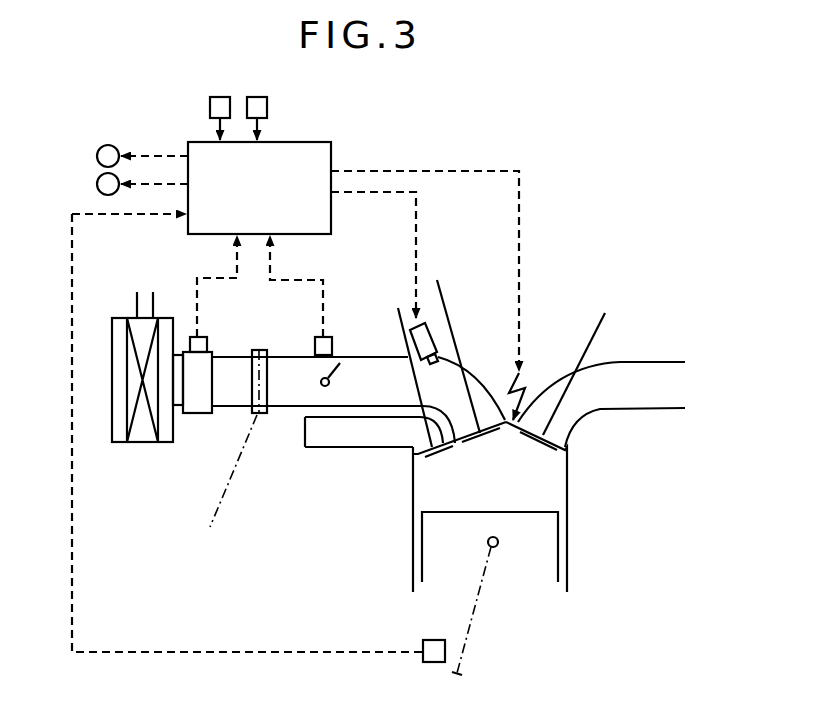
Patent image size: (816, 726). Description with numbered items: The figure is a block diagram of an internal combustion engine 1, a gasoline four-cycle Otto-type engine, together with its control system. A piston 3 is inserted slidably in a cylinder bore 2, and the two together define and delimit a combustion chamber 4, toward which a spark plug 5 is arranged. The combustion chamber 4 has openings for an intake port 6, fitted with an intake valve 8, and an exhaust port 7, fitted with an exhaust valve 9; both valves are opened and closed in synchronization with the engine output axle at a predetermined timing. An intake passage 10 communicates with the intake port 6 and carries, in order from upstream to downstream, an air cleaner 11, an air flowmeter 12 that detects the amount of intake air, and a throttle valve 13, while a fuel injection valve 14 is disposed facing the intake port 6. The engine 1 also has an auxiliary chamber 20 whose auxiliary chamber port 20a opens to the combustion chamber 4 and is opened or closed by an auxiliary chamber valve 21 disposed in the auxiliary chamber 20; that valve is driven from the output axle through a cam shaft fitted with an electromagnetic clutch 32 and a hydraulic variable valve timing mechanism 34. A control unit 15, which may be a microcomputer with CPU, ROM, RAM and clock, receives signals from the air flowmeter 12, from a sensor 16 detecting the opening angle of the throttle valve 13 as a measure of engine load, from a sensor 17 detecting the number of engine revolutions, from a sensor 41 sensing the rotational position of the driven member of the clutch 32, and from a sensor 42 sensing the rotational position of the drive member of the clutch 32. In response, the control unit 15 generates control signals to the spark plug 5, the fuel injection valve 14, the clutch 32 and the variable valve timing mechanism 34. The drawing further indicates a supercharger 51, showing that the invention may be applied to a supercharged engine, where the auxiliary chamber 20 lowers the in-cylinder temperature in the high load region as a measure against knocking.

The internal combustion engine 1 is at (578, 511).
The cylinder bore 2 is at (416, 495).
The piston 3 is at (532, 515).
The combustion chamber 4 is at (477, 502).
The spark plug 5 is at (522, 397).
The intake port 6 is at (482, 408).
The exhaust port 7 is at (580, 414).
The intake valve 8 is at (448, 313).
The exhaust valve 9 is at (596, 337).
The intake passage 10 is at (233, 408).
The air cleaner 11 is at (110, 403).
The air flowmeter 12 is at (208, 340).
The throttle valve 13 is at (321, 386).
The fuel injection valve 14 is at (430, 322).
The control unit 15 is at (331, 160).
The throttle opening sensor 16 is at (318, 336).
The engine speed sensor 17 is at (428, 640).
The auxiliary chamber 20 is at (318, 450).
The auxiliary chamber port 20a is at (387, 435).
The auxiliary chamber valve 21 is at (408, 332).
The clutch 32 is at (101, 147).
The variable valve timing mechanism 34 is at (97, 183).
The driven member position sensor 41 is at (210, 106).
The drive member position sensor 42 is at (267, 105).
The supercharger 51 is at (222, 488).